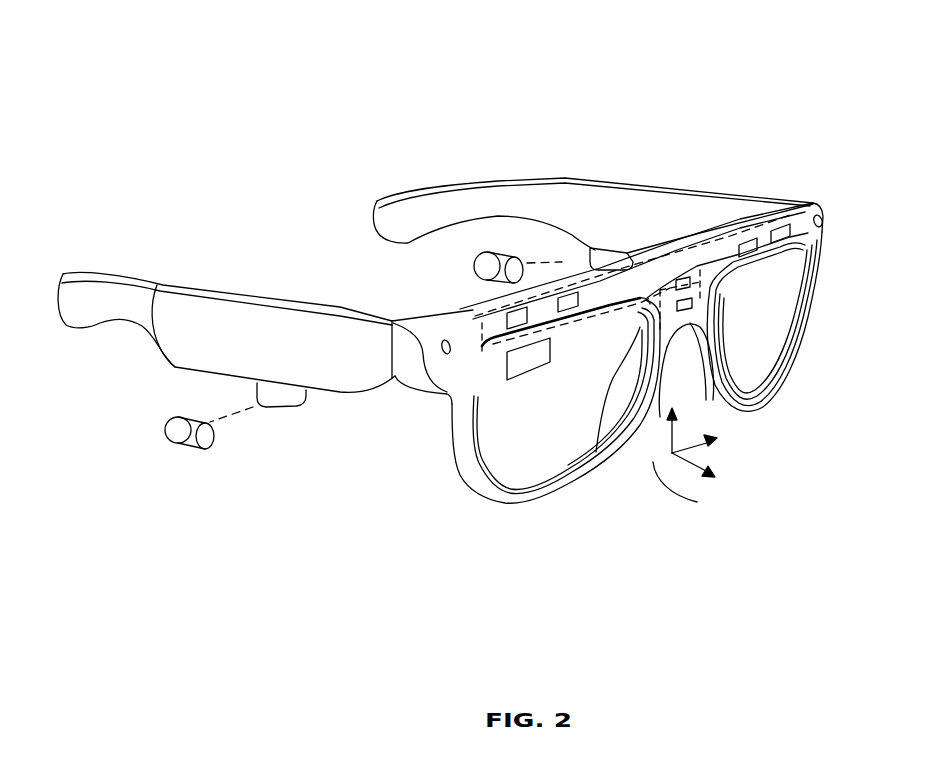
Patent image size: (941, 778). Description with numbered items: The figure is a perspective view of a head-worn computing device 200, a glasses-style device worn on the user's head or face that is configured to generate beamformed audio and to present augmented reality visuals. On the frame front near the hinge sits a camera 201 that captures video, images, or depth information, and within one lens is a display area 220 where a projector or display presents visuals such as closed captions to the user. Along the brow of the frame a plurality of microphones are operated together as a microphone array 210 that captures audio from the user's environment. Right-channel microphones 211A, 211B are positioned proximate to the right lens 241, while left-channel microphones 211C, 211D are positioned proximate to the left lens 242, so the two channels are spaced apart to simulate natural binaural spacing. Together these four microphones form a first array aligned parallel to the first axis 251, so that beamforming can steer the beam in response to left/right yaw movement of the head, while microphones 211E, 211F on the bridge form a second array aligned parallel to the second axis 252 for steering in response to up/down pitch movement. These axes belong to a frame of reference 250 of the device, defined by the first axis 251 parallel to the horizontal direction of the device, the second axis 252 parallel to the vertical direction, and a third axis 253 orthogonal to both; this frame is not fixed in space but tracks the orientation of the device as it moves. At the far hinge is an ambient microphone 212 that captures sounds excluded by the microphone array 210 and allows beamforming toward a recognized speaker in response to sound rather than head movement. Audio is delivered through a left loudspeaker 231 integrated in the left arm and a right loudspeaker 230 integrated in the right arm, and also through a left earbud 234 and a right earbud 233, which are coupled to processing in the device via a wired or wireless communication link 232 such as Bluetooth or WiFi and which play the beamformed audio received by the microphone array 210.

The head-worn computing device 200 is at (134, 84).
The camera 201 is at (446, 356).
The microphone array 210 is at (680, 247).
The microphone 211A is at (507, 316).
The microphone 211B is at (560, 294).
The microphone 211C is at (742, 241).
The microphone 211D is at (778, 227).
The microphone 211E is at (696, 283).
The microphone 211F is at (697, 303).
The ambient microphone 212 is at (822, 215).
The display area 220 is at (560, 351).
The right loudspeaker 230 is at (280, 408).
The left loudspeaker 231 is at (603, 250).
The communication link 232 is at (240, 410).
The right earbud 233 is at (187, 447).
The left earbud 234 is at (473, 259).
The right lens 241 is at (562, 453).
The left lens 242 is at (753, 384).
The frame of reference 250 is at (748, 483).
The first axis 251 is at (720, 438).
The second axis 252 is at (678, 412).
The third axis 253 is at (708, 483).